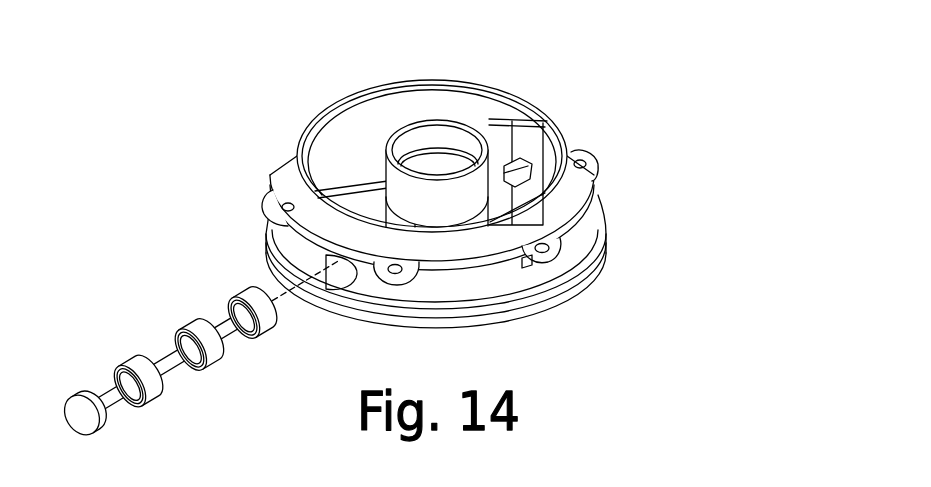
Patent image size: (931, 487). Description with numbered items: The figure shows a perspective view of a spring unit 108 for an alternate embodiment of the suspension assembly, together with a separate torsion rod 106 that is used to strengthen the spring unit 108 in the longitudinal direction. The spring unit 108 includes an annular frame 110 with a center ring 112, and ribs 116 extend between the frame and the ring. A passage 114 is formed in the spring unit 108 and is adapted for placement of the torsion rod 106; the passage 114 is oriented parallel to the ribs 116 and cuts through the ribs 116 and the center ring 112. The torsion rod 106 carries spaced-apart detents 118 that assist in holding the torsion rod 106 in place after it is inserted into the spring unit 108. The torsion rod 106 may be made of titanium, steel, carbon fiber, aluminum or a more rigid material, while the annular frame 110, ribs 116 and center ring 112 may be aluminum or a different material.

The torsion rod 106 is at (113, 395).
The spring unit 108 is at (701, 180).
The annular frame 110 is at (505, 243).
The center ring 112 is at (408, 125).
The passage 114 is at (520, 170).
The ribs 116 is at (375, 187).
The detents 118 is at (182, 333).